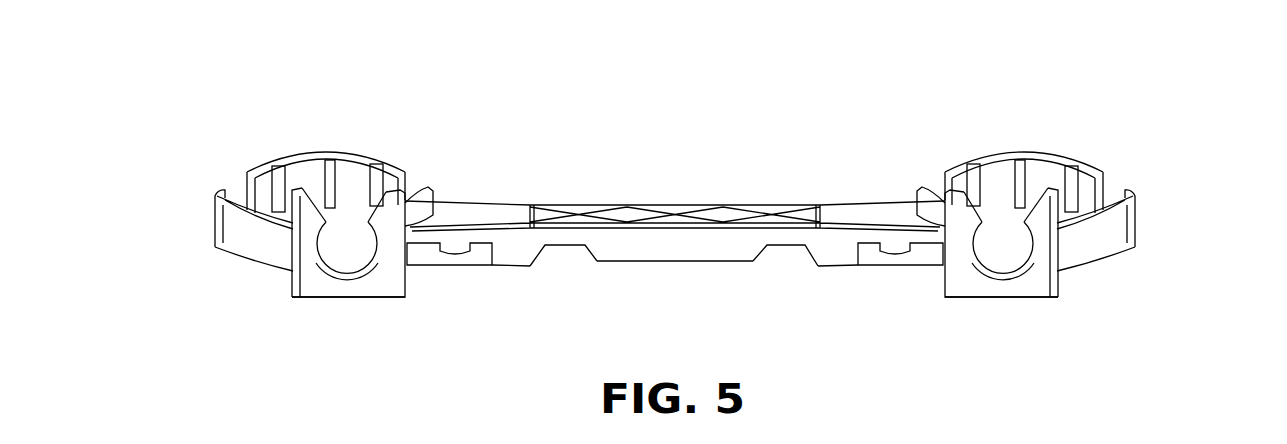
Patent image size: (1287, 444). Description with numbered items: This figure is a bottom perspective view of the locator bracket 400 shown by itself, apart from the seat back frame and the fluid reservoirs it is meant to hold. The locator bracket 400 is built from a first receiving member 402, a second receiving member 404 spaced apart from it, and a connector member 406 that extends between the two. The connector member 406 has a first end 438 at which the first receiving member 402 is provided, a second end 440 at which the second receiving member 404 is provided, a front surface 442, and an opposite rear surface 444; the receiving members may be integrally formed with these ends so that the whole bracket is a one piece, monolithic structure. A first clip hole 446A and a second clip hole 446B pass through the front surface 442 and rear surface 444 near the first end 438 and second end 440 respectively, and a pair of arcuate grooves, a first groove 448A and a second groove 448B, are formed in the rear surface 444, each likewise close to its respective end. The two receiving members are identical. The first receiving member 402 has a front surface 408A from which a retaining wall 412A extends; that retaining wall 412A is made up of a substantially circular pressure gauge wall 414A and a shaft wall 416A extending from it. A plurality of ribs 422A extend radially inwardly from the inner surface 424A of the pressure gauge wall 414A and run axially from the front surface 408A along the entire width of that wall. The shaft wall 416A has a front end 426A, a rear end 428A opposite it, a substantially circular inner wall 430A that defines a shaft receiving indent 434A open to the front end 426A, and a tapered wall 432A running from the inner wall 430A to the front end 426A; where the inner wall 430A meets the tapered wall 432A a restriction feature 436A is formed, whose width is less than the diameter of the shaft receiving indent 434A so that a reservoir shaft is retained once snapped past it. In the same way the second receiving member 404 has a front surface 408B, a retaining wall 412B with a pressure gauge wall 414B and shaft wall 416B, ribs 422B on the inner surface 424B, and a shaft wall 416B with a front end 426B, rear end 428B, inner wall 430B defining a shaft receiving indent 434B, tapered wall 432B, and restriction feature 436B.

The locator bracket 400 is at (596, 138).
The first receiving member 402 is at (322, 120).
The second receiving member 404 is at (1053, 163).
The connector member 406 is at (760, 186).
The front surface 408A is at (350, 215).
The front surface 408B is at (998, 215).
The retaining wall 412A is at (268, 141).
The retaining wall 412B is at (1095, 155).
The pressure gauge wall 414A is at (212, 225).
The pressure gauge wall 414B is at (1140, 229).
The shaft wall 416A is at (300, 302).
The shaft wall 416B is at (1060, 300).
The ribs 422A is at (340, 158).
The ribs 422B is at (1037, 144).
The inner surface 424A is at (302, 152).
The inner surface 424B is at (1052, 153).
The front end 426A is at (405, 200).
The front end 426B is at (945, 200).
The rear end 428A is at (365, 297).
The rear end 428B is at (1001, 297).
The inner wall 430A is at (382, 263).
The inner wall 430B is at (990, 258).
The tapered wall 432A is at (386, 190).
The tapered wall 432B is at (962, 190).
The shaft receiving indent 434A is at (337, 250).
The shaft receiving indent 434B is at (1011, 250).
The restriction feature 436A is at (324, 220).
The restriction feature 436B is at (1026, 222).
The first end 438 is at (430, 212).
The second end 440 is at (915, 268).
The front surface 442 is at (673, 205).
The rear surface 444 is at (677, 263).
The first clip hole 446A is at (458, 253).
The second clip hole 446B is at (892, 253).
The first groove 448A is at (560, 247).
The second groove 448B is at (787, 247).